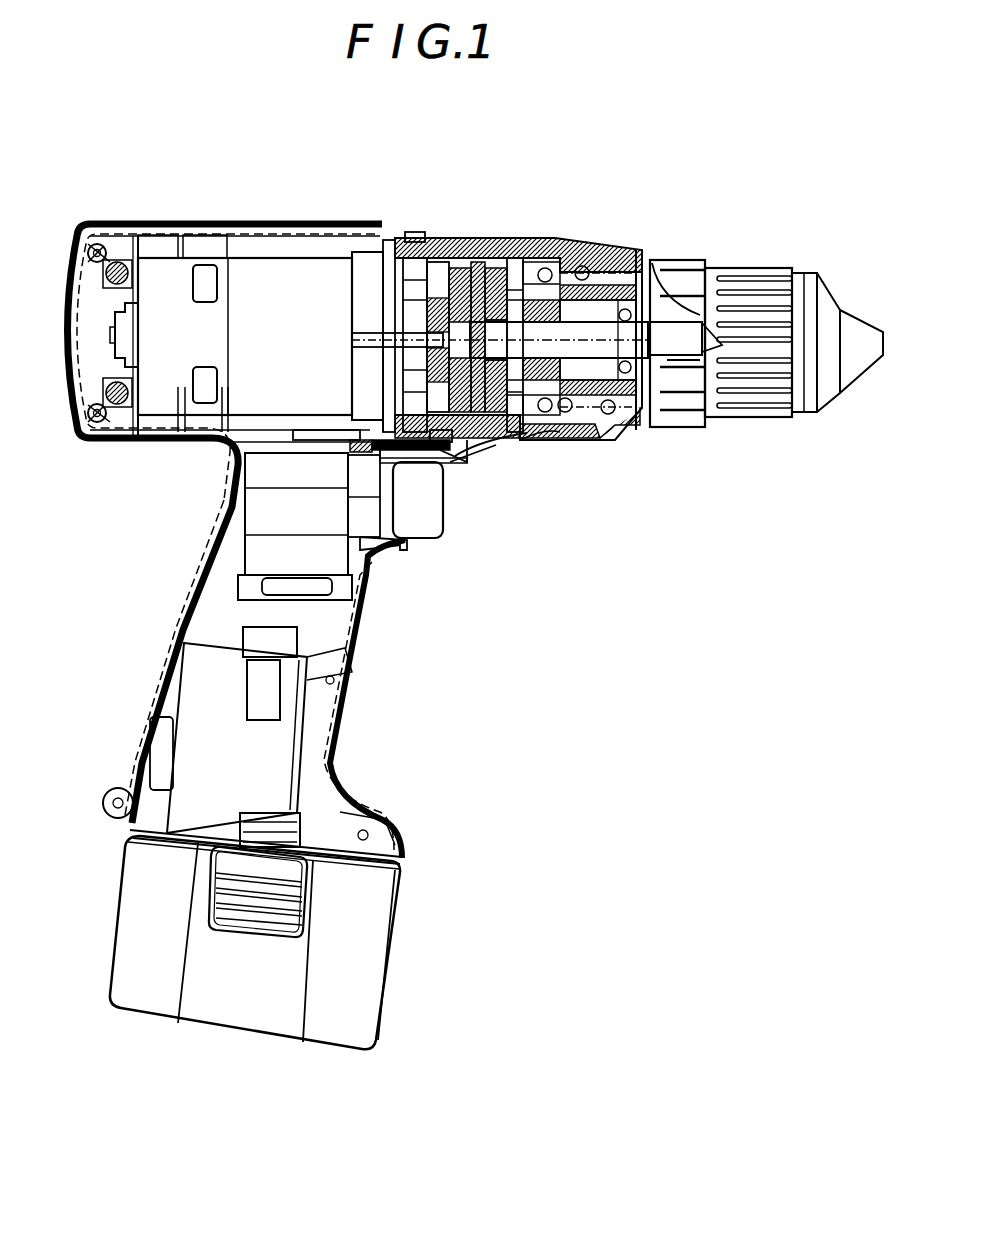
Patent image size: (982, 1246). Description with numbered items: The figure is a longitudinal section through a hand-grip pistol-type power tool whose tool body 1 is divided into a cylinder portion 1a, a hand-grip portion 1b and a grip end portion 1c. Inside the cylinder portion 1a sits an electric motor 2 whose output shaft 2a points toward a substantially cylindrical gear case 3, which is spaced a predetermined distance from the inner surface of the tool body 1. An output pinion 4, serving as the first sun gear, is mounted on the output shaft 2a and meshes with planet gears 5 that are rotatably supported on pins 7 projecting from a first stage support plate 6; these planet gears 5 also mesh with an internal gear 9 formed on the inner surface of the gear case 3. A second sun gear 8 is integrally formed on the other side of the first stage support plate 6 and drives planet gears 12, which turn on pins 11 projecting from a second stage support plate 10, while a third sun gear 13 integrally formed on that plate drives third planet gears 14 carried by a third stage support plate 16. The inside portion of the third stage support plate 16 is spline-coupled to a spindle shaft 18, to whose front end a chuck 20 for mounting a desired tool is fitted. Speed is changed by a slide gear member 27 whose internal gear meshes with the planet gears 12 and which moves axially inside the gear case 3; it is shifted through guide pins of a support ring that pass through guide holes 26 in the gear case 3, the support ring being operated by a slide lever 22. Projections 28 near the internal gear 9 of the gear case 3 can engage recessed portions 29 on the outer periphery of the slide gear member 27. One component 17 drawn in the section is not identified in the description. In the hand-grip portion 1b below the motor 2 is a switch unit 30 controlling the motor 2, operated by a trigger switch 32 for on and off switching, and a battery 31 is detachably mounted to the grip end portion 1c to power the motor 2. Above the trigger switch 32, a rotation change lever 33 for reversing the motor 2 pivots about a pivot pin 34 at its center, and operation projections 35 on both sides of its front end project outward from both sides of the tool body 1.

The tool body 1 is at (233, 195).
The cylinder portion 1a is at (62, 240).
The hand-grip portion 1b is at (190, 585).
The grip end portion 1c is at (120, 862).
The electric motor 2 is at (283, 268).
The output shaft 2a is at (395, 345).
The gear case 3 is at (492, 238).
The output pinion 4 is at (400, 364).
The planet gears 5 is at (400, 325).
The first stage support plate 6 is at (400, 382).
The pins 7 is at (400, 302).
The second sun gear 8 is at (518, 340).
The internal gear 9 is at (400, 280).
The second stage support plate 10 is at (525, 416).
The pins 11 is at (488, 240).
The planet gears 12 is at (483, 420).
The third sun gear 13 is at (583, 420).
The third planet gears 14 is at (507, 242).
The third stage support plate 16 is at (565, 244).
The spindle support sleeve 17 is at (545, 320).
The spindle shaft 18 is at (645, 420).
The chuck 20 is at (822, 396).
The slide lever 22 is at (458, 242).
The guide holes 26 is at (548, 424).
The slide gear member 27 is at (420, 240).
The projections 28 is at (418, 243).
The recessed portions 29 is at (472, 238).
The switch unit 30 is at (257, 513).
The battery 31 is at (130, 925).
The trigger switch 32 is at (443, 523).
The rotation change lever 33 is at (362, 448).
The pivot pin 34 is at (345, 450).
The operation projections 35 is at (447, 467).